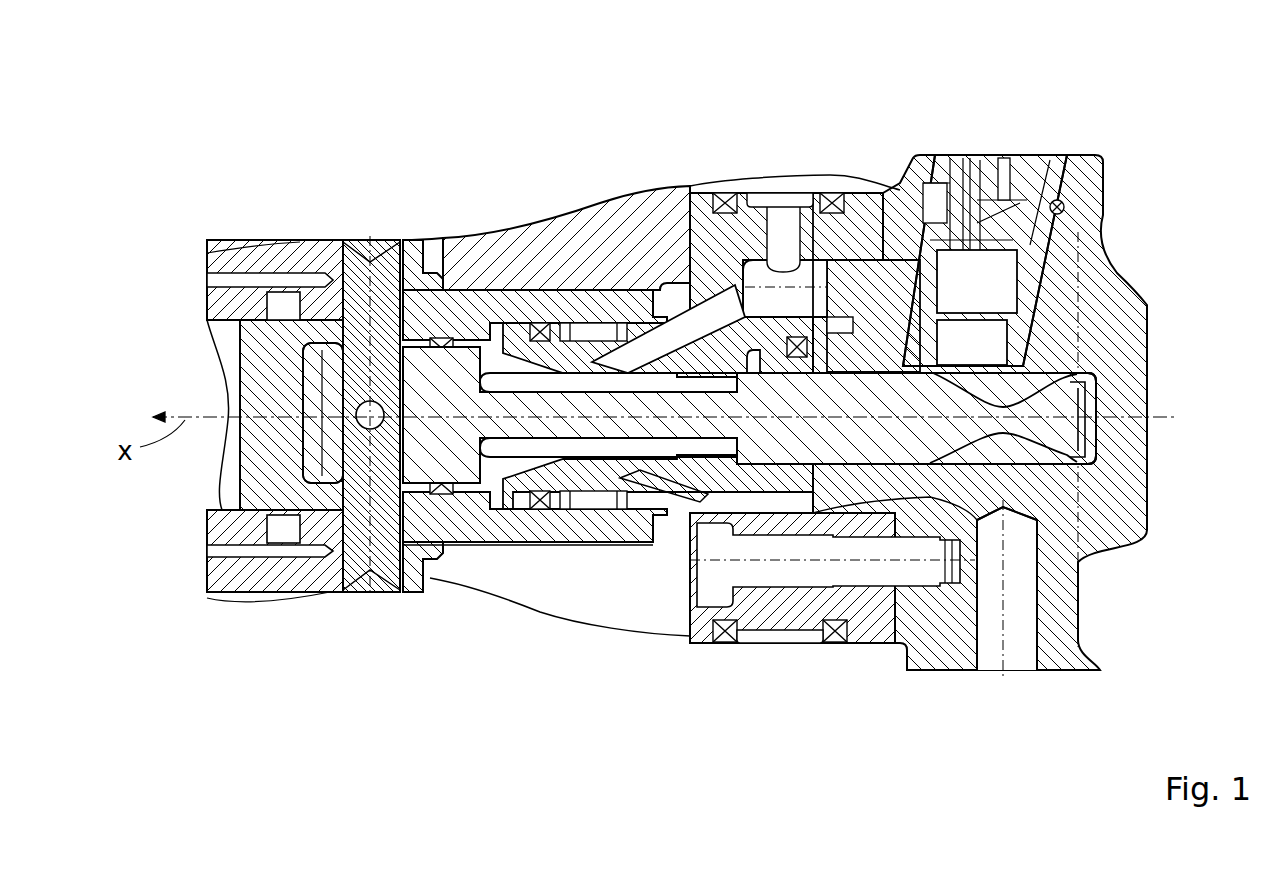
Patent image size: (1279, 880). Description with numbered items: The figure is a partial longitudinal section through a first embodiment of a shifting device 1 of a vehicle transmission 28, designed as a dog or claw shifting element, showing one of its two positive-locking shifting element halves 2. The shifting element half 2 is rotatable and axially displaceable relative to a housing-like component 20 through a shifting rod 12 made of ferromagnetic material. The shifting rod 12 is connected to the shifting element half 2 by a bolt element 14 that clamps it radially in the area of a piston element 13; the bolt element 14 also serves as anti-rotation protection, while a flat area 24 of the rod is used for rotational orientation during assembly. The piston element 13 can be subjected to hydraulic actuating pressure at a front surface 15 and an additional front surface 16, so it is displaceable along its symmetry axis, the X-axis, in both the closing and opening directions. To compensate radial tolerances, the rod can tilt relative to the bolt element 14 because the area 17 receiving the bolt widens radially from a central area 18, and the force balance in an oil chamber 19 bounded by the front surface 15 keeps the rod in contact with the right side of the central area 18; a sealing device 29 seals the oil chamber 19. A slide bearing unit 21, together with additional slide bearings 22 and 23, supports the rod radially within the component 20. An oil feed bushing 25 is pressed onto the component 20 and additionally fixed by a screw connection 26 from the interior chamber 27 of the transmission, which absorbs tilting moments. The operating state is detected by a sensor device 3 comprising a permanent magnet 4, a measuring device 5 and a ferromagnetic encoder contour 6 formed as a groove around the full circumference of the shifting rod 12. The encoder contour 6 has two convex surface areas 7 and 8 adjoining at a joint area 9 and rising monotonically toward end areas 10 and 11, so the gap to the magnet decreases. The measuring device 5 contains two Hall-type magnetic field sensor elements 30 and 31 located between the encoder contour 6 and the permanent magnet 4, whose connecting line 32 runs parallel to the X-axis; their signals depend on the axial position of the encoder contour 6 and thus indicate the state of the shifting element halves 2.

The shifting device 1 is at (208, 182).
The shifting element half 2 is at (290, 262).
The sensor device 3 is at (985, 150).
The permanent magnet 4 is at (900, 300).
The measuring device 5 is at (877, 260).
The encoder contour 6 is at (1105, 545).
The surface area 7 is at (1065, 405).
The surface area 8 is at (1025, 470).
The joint area 9 is at (1082, 582).
The end area 10 is at (968, 520).
The end area 11 is at (1105, 496).
The shifting rod 12 is at (868, 438).
The piston element 13 is at (440, 592).
The bolt element 14 is at (357, 594).
The front surface 15 is at (503, 547).
The additional front surface 16 is at (275, 468).
The area receiving the bolt element 17 is at (330, 588).
The central area 18 is at (330, 412).
The oil chamber 19 is at (503, 377).
The component 20 is at (800, 250).
The slide bearing unit 21 is at (738, 290).
The slide bearing 22 is at (440, 338).
The slide bearing 23 is at (282, 540).
The flat area 24 is at (330, 385).
The oil feed bushing 25 is at (665, 275).
The screw connection 26 is at (683, 572).
The interior chamber 27 is at (610, 252).
The vehicle transmission 28 is at (556, 213).
The sealing device 29 is at (1065, 212).
The magnetic field sensor element 30 is at (1045, 425).
The magnetic field sensor element 31 is at (970, 343).
The connecting line 32 is at (988, 300).